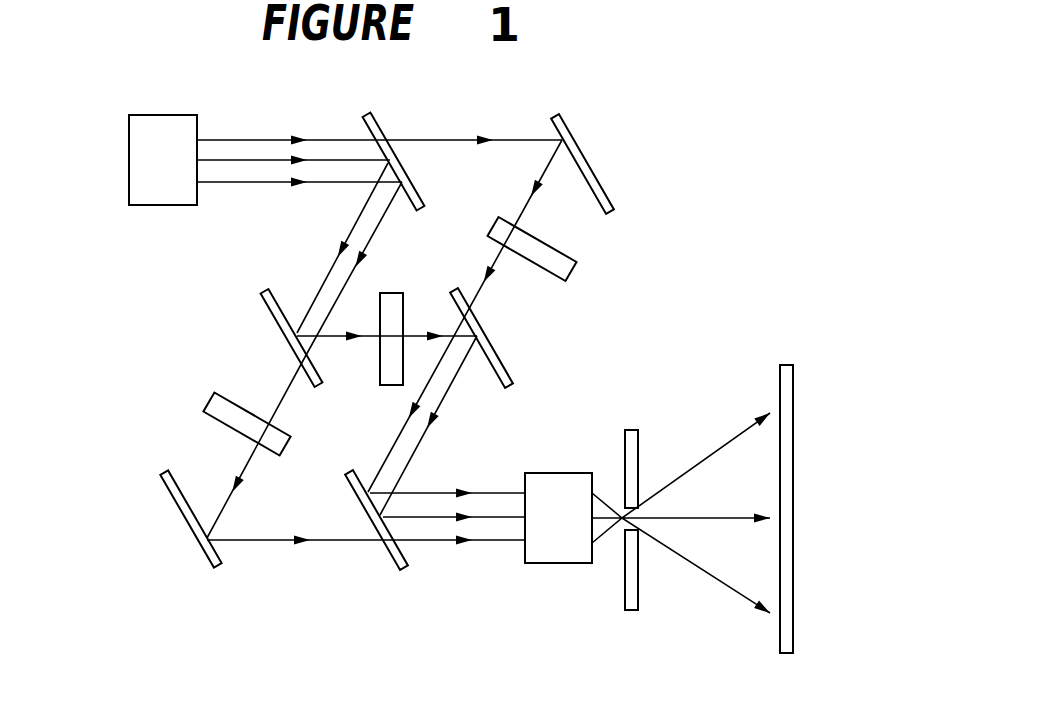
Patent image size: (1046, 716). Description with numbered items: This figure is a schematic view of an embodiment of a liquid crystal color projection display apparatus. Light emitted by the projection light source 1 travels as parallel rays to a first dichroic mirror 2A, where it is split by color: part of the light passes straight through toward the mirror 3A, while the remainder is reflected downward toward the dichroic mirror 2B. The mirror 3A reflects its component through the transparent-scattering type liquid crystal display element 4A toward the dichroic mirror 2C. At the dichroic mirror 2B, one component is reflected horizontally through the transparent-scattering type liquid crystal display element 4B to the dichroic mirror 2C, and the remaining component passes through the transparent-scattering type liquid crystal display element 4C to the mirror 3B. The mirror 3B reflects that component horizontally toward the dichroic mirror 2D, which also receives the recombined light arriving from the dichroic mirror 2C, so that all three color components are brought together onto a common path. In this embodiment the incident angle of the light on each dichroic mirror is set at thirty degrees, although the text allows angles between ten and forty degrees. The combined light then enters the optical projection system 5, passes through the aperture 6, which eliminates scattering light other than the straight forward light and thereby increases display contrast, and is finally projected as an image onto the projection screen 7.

The projection light source 1 is at (152, 115).
The dichroic mirror 2A is at (378, 117).
The dichroic mirror 2B is at (265, 301).
The dichroic mirror 2C is at (503, 382).
The dichroic mirror 2D is at (398, 565).
The mirror 3A is at (569, 138).
The mirror 3B is at (178, 502).
The transparent-scattering type liquid crystal display element 4A is at (576, 265).
The transparent-scattering type liquid crystal display element 4B is at (396, 292).
The transparent-scattering type liquid crystal display element 4C is at (209, 405).
The optical projection system 5 is at (540, 563).
The aperture 6 is at (630, 430).
The projection screen 7 is at (778, 628).